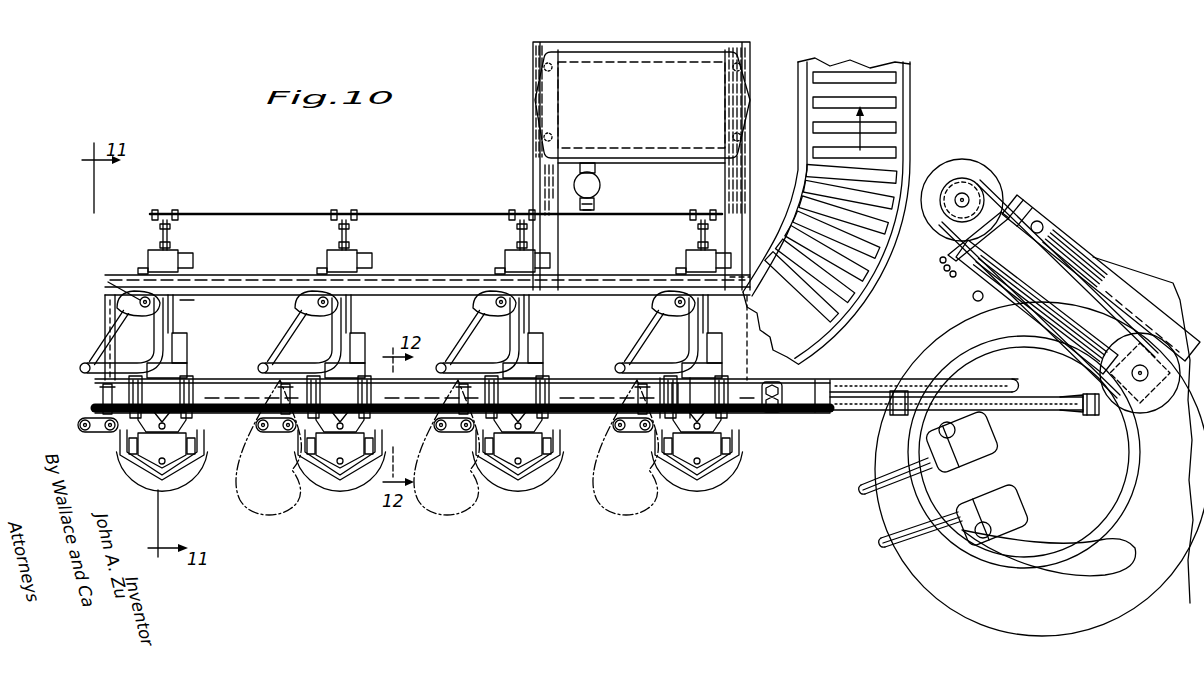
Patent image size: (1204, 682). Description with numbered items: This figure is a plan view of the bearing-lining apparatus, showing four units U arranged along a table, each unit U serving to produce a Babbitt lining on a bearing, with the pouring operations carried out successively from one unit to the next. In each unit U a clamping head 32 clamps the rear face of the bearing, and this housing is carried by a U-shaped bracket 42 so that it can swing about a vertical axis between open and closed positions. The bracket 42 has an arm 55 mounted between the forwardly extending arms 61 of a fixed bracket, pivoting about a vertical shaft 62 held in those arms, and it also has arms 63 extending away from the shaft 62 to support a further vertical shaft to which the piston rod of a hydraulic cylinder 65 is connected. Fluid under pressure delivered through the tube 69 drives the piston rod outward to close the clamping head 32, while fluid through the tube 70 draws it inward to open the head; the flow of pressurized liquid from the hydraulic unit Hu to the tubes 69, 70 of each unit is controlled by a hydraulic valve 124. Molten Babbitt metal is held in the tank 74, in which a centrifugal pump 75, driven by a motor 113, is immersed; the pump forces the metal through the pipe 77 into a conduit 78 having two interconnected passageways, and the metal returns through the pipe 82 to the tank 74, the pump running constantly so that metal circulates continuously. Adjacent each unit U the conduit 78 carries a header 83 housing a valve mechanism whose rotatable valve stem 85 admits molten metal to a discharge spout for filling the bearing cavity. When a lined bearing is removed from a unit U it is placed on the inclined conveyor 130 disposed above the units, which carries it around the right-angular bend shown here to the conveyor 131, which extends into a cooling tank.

The conveyor 131 is at (915, 104).
The inclined conveyor 130 is at (880, 277).
The motor 113 is at (977, 177).
The hydraulic valve 124 is at (195, 256).
The hydraulic unit Hu is at (638, 112).
The tube 69 is at (146, 298).
The hydraulic cylinder 65 is at (110, 317).
The tube 70 is at (118, 364).
The header 83 is at (165, 378).
The arms 61 is at (110, 392).
The vertical shaft 62 is at (110, 410).
The arms 63 is at (88, 415).
The arm 55 is at (102, 442).
The valve stem 85 is at (187, 428).
The clamping head 32 is at (165, 452).
The unit u is at (128, 468).
The bracket 42 is at (185, 467).
The pipe 82 is at (850, 382).
The pipe 77 is at (1032, 413).
The conduit 78 is at (790, 404).
The centrifugal pump 75 is at (1103, 418).
The tank 74 is at (953, 598).